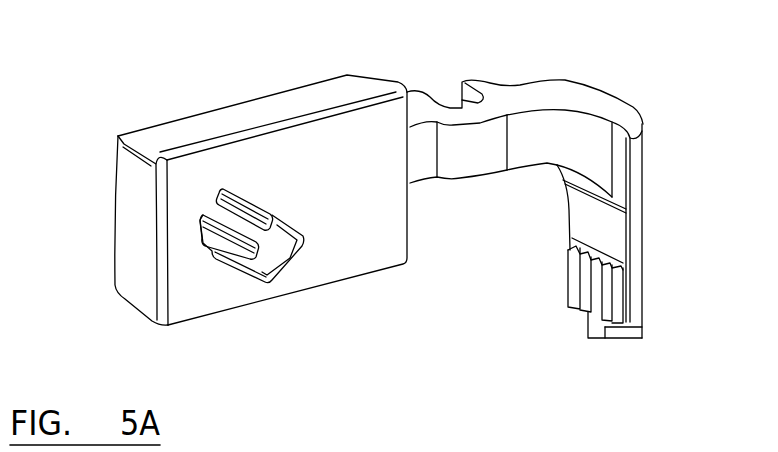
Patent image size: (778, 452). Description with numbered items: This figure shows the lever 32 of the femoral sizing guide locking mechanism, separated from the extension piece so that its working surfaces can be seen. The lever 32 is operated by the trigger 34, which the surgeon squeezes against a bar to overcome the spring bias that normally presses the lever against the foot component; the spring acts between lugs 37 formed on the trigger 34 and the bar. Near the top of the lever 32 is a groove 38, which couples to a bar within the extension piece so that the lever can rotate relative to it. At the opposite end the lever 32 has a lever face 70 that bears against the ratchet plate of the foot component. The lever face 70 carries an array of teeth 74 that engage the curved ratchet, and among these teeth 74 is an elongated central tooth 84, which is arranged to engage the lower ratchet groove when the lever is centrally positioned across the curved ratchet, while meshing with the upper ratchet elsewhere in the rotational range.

The lever 32 is at (583, 147).
The trigger 34 is at (288, 167).
The lugs 37 is at (280, 248).
The groove 38 is at (462, 100).
The lever face 70 is at (608, 231).
The teeth 74 is at (567, 280).
The elongated central tooth 84 is at (597, 338).